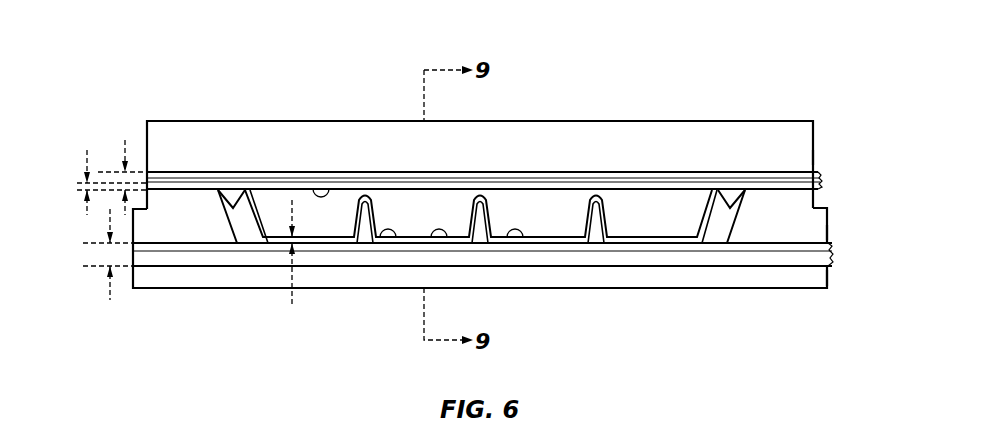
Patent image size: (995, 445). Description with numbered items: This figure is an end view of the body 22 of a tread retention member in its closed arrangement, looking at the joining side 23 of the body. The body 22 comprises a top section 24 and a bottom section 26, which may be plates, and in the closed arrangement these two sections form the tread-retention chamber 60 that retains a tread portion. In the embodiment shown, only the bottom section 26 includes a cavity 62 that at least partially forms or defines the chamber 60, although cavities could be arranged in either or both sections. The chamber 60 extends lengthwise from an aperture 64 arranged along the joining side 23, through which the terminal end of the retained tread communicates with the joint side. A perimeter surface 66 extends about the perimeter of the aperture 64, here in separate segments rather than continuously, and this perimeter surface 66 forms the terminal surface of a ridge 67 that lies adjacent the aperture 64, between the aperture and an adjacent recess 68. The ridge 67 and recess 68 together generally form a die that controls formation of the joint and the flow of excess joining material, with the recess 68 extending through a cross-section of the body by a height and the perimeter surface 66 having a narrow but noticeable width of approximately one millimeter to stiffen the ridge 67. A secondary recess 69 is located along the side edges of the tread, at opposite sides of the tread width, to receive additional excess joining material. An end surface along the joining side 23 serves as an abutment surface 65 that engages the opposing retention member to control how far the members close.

The body 22 is at (165, 52).
The joining side 23 is at (768, 302).
The top section 24 is at (698, 140).
The bottom section 26 is at (693, 283).
The tread-retention chamber 60 is at (535, 217).
The cavity 62 is at (520, 233).
The aperture 64 is at (447, 238).
The abutment surface 65 is at (800, 150).
The perimeter surface 66 is at (777, 188).
The ridge 67 is at (815, 188).
The recess 68 is at (820, 180).
The secondary recess 69 is at (234, 198).